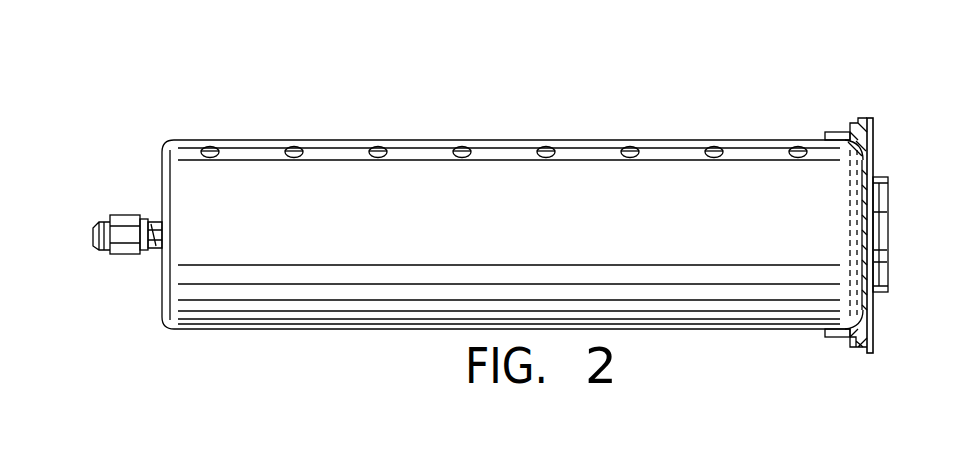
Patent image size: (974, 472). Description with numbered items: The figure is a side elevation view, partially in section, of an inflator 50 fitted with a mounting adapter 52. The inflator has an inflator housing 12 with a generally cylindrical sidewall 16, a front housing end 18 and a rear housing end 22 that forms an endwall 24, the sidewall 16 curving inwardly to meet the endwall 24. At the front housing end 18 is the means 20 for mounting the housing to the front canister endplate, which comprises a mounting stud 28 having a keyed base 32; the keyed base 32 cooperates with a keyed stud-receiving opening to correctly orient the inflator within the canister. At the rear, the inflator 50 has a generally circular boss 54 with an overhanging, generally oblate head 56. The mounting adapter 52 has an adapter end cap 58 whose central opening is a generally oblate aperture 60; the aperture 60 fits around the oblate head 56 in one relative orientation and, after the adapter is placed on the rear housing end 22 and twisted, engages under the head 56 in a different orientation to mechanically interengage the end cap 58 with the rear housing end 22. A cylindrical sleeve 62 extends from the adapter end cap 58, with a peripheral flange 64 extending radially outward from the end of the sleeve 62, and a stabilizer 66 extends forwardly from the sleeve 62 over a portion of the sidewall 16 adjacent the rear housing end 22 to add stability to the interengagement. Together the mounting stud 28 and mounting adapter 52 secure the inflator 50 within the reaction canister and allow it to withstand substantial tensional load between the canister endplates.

The inflator 50 is at (503, 100).
The inflator housing 12 is at (250, 134).
The cylindrical sidewall 16 is at (353, 138).
The front housing end 18 is at (162, 162).
The means for mounting 20 is at (127, 215).
The mounting stud 28 is at (117, 218).
The keyed base 32 is at (145, 252).
The rear housing end 22 is at (860, 215).
The endwall 24 is at (862, 240).
The oblate aperture 60 is at (870, 268).
The mounting adapter 52 is at (858, 348).
The boss 54 is at (885, 258).
The oblate head 56 is at (883, 182).
The adapter end cap 58 is at (873, 150).
The cylindrical sleeve 62 is at (855, 124).
The peripheral flange 64 is at (868, 118).
The stabilizer 66 is at (833, 133).